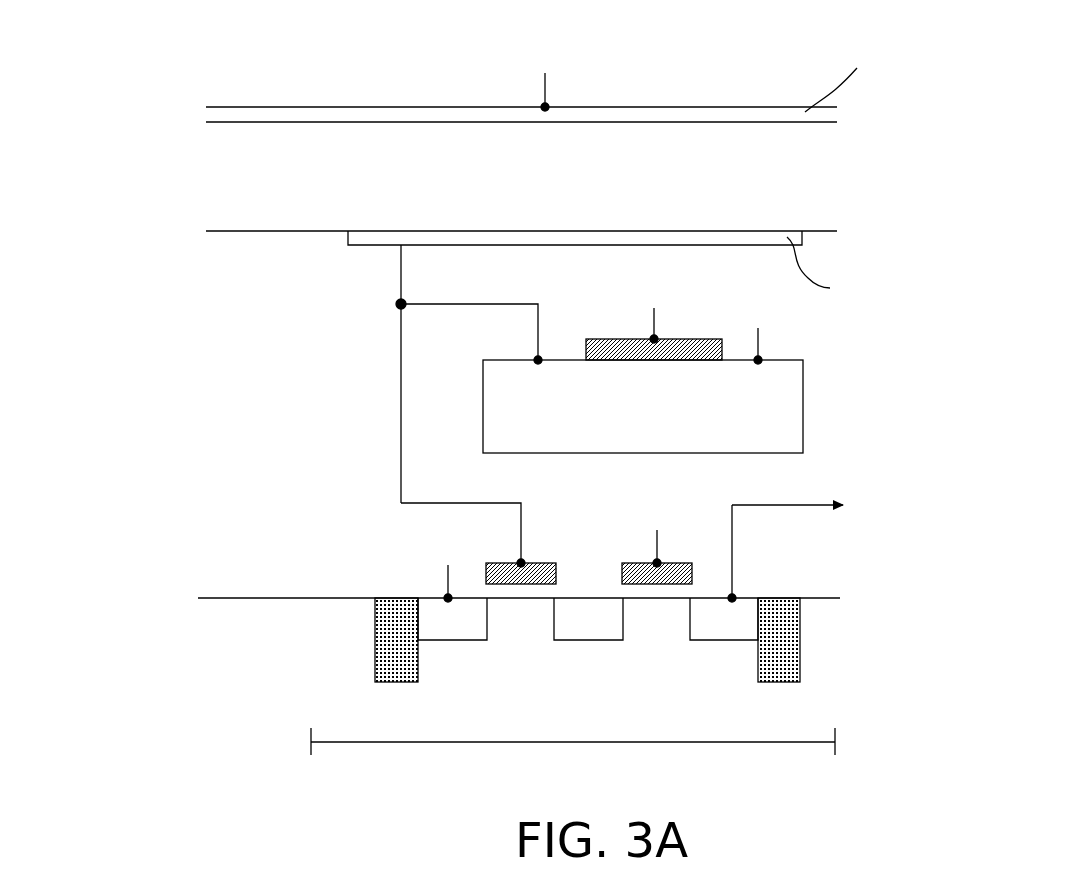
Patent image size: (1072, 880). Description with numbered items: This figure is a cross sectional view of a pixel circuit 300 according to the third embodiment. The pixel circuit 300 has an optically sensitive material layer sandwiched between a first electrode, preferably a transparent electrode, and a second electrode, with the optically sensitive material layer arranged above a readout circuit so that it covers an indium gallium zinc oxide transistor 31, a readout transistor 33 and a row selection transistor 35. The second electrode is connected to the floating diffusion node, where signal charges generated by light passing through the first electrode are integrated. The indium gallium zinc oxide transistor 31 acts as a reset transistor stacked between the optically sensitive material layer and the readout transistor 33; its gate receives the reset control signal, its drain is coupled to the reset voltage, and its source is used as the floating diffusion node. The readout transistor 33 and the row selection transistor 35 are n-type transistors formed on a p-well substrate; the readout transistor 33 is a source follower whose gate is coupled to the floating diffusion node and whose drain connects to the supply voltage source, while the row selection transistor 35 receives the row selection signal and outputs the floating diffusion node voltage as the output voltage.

The pixel circuit 300 is at (132, 69).
The IGZO transistor 31 is at (803, 402).
The readout transistor 33 is at (537, 540).
The row selection transistor 35 is at (630, 540).